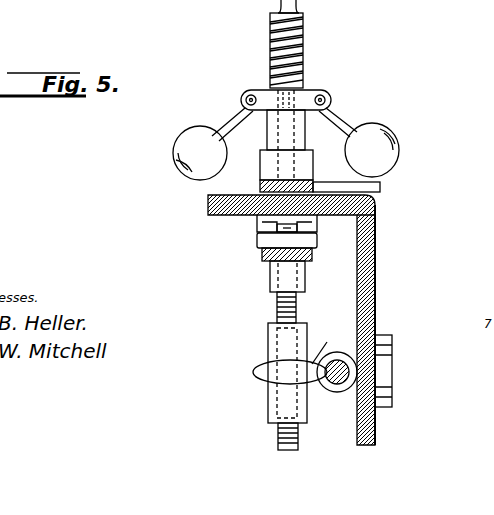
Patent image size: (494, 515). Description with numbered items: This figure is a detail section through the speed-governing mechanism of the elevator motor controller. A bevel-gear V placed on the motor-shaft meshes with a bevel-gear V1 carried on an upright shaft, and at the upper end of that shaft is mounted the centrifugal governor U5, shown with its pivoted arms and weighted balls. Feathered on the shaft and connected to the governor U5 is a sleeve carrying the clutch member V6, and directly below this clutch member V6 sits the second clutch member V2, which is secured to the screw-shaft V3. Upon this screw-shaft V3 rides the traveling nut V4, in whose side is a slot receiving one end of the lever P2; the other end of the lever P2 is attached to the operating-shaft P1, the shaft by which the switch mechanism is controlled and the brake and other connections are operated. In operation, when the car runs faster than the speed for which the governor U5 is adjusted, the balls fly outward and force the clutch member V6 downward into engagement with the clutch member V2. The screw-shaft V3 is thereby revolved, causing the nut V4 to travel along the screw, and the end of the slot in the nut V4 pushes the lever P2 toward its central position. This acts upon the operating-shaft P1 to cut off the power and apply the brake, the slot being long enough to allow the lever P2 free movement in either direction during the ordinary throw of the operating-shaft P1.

The governor U5 is at (243, 97).
The bevel-gear V1 is at (210, 198).
The clutch member V6 is at (256, 226).
The clutch member V2 is at (258, 240).
The bevel-gear V is at (376, 255).
The screw-shaft V3 is at (277, 348).
The traveling nut V4 is at (254, 372).
The operating-shaft P1 is at (333, 396).
The lever P2 is at (324, 341).